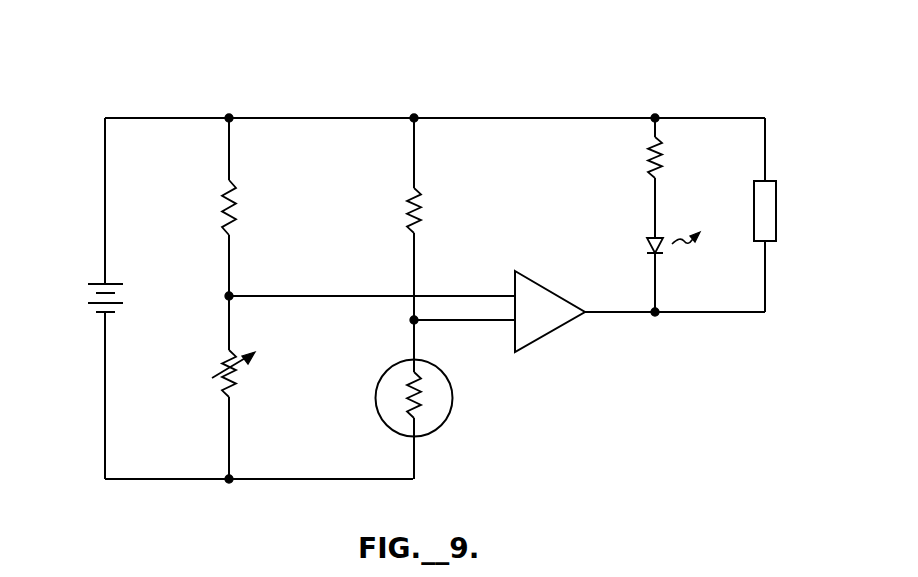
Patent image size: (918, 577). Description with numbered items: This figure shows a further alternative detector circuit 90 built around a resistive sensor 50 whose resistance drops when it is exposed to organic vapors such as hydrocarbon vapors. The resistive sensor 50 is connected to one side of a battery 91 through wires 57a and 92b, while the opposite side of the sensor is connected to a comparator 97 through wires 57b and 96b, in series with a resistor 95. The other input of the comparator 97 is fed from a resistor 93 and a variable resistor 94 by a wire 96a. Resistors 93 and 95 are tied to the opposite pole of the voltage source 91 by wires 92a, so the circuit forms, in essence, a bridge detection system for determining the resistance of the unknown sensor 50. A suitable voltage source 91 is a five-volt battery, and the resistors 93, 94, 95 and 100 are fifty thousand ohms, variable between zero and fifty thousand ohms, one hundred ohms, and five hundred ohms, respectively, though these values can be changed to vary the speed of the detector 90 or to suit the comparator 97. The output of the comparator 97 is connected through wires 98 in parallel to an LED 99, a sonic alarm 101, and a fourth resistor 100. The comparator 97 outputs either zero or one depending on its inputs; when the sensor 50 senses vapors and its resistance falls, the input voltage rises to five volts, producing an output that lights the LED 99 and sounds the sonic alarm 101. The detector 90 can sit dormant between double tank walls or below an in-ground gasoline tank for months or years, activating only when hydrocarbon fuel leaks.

The circuit diagram 90 is at (637, 52).
The battery 91 is at (88, 293).
The wires 92a is at (149, 117).
The wire 92b is at (220, 481).
The resistor 93 is at (236, 213).
The variable resistor 94 is at (238, 378).
The resistor 95 is at (421, 213).
The wire 96a is at (493, 295).
The wire 96b is at (506, 321).
The comparator 97 is at (538, 284).
The wires 98 is at (645, 314).
The LED 99 is at (660, 256).
The fourth resistor 100 is at (663, 160).
The sonic alarm 101 is at (777, 206).
The resistive sensor 50 is at (452, 410).
The wire 57a is at (415, 438).
The wire 57b is at (416, 360).